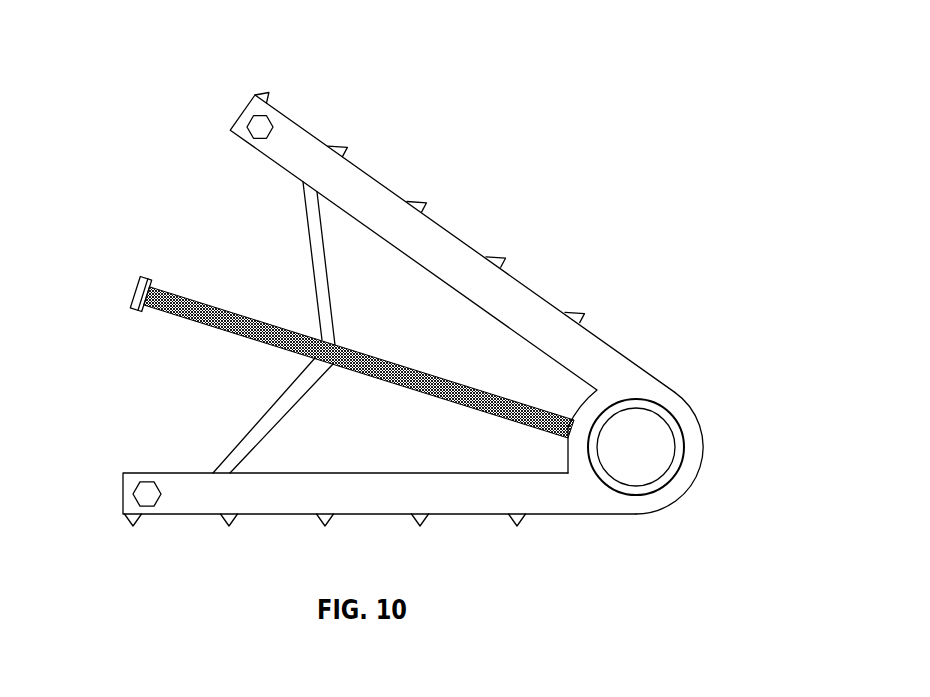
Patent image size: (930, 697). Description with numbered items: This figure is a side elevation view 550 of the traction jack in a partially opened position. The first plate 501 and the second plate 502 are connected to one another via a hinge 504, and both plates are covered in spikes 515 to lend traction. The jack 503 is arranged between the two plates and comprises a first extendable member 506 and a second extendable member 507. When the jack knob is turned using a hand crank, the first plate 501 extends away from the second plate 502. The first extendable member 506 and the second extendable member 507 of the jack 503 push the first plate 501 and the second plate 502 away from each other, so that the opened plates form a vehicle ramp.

The side elevation view 550 is at (590, 67).
The first plate 501 is at (302, 150).
The second plate 502 is at (190, 505).
The jack 503 is at (192, 118).
The hinge 504 is at (647, 502).
The first extendable member 506 is at (318, 235).
The second extendable member 507 is at (270, 420).
The spikes 515 is at (427, 207).